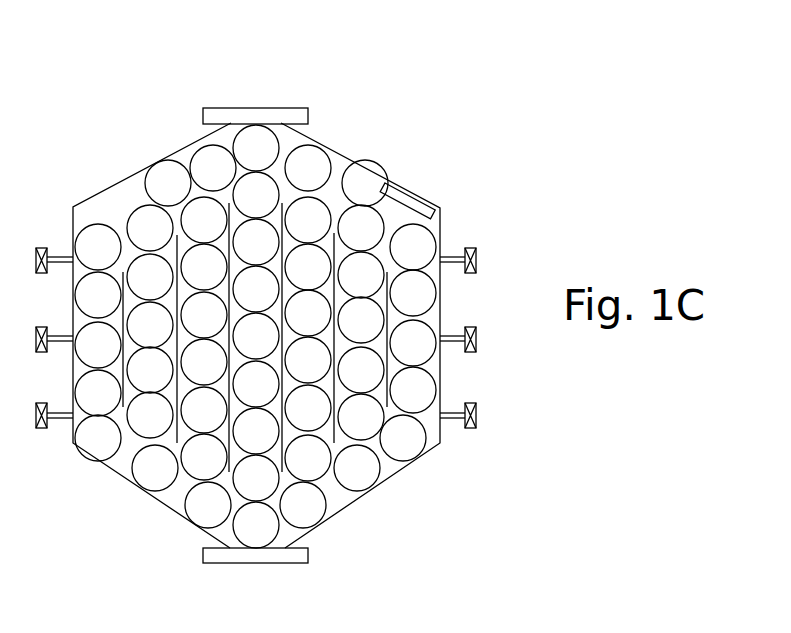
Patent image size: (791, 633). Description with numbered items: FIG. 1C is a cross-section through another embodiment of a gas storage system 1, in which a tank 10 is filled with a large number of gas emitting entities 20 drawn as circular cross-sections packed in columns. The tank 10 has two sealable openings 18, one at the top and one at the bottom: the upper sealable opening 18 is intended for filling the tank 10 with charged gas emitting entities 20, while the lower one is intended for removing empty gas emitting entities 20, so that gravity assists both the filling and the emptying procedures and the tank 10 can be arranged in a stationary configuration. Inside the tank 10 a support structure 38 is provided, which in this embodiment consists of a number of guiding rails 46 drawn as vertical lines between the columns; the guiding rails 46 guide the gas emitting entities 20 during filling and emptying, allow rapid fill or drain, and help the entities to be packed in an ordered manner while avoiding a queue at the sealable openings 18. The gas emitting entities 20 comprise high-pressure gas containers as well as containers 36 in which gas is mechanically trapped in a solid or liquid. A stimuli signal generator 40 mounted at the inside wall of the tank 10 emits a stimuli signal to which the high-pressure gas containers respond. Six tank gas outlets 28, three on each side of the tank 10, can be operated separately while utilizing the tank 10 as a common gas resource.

The gas storage system 1 is at (540, 148).
The tank 10 is at (122, 180).
The sealable opening 18 is at (255, 115).
The gas emitting entity 20 is at (350, 172).
The tank gas outlet 28 is at (62, 258).
The container 36 is at (358, 468).
The support structure 38 is at (283, 442).
The stimuli signal generator 40 is at (412, 200).
The guiding rail 46 is at (158, 444).